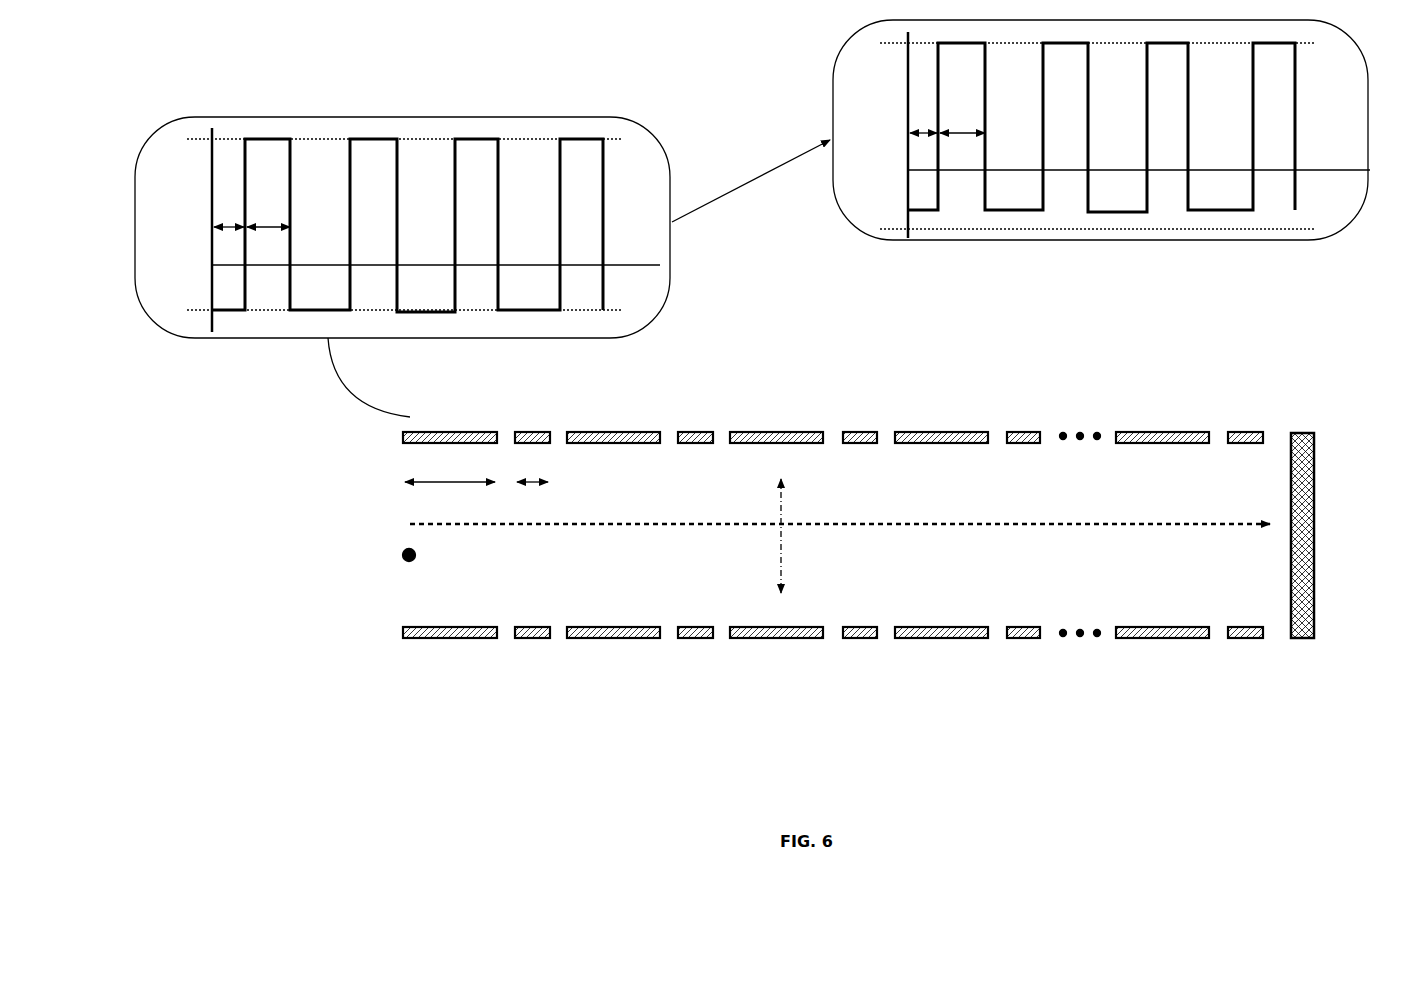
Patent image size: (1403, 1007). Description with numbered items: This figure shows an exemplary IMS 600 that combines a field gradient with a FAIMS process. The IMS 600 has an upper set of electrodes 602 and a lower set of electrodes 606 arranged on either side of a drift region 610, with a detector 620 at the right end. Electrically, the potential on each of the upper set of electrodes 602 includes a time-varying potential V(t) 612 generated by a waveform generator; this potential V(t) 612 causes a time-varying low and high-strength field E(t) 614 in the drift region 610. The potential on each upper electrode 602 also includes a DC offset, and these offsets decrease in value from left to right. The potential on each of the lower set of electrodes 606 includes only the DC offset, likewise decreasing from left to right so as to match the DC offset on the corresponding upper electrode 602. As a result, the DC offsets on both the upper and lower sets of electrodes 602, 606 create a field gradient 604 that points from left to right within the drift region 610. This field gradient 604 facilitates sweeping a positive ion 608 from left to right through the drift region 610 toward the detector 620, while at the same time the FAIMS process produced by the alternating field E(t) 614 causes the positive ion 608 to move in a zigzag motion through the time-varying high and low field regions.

The IMS 600 is at (985, 317).
The upper set of electrodes 602 is at (1270, 392).
The field gradient 604 is at (1008, 525).
The lower set of electrodes 606 is at (1272, 682).
The positive ion 608 is at (403, 562).
The drift region 610 is at (840, 497).
The time-varying potential V(t) 612 is at (628, 117).
The time-varying low and high-strength field E(t) 614 is at (848, 220).
The detector 620 is at (1303, 638).